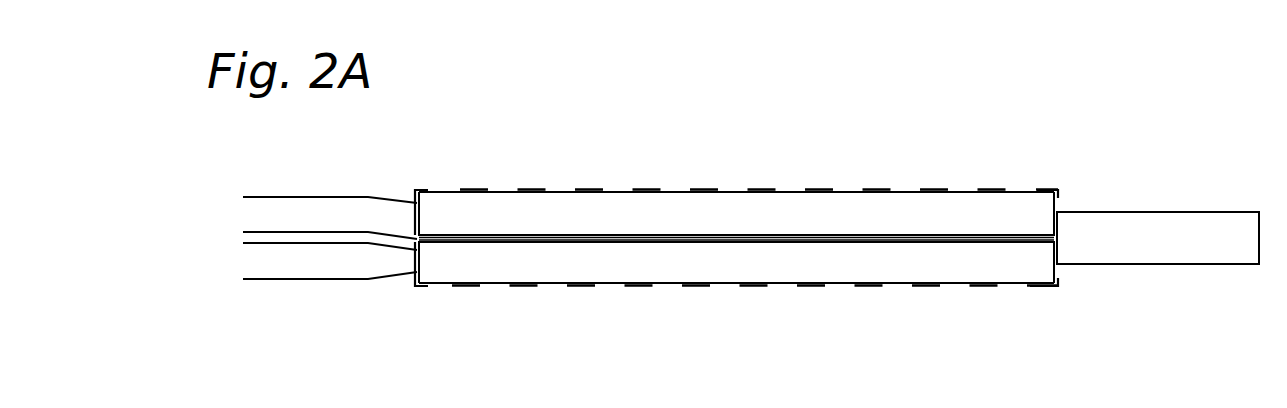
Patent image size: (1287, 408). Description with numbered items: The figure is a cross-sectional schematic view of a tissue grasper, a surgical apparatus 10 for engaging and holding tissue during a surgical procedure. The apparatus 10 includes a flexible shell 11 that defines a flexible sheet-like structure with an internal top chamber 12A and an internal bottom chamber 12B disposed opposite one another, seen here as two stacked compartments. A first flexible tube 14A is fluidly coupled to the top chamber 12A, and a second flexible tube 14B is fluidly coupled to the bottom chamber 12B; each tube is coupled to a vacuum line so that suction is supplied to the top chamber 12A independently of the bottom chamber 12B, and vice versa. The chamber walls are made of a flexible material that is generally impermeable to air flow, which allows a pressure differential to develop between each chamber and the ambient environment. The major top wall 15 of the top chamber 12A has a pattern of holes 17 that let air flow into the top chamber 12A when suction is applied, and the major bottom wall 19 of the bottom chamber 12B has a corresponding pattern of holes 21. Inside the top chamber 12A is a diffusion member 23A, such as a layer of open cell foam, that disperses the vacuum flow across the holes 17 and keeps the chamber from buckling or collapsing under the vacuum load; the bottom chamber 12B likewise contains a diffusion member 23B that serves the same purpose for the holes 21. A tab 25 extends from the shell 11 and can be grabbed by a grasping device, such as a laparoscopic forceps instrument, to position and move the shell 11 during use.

The surgical apparatus 10 is at (1031, 147).
The flexible shell 11 is at (1045, 287).
The top chamber 12A is at (416, 196).
The bottom chamber 12B is at (412, 283).
The first flexible tube 14A is at (319, 196).
The second flexible tube 14B is at (333, 280).
The major top wall 15 is at (758, 192).
The pattern of holes 17 is at (675, 192).
The major bottom wall 19 is at (873, 287).
The pattern of holes 21 is at (843, 287).
The diffusion member 23A is at (850, 208).
The diffusion member 23B is at (722, 258).
The tab 25 is at (1128, 212).